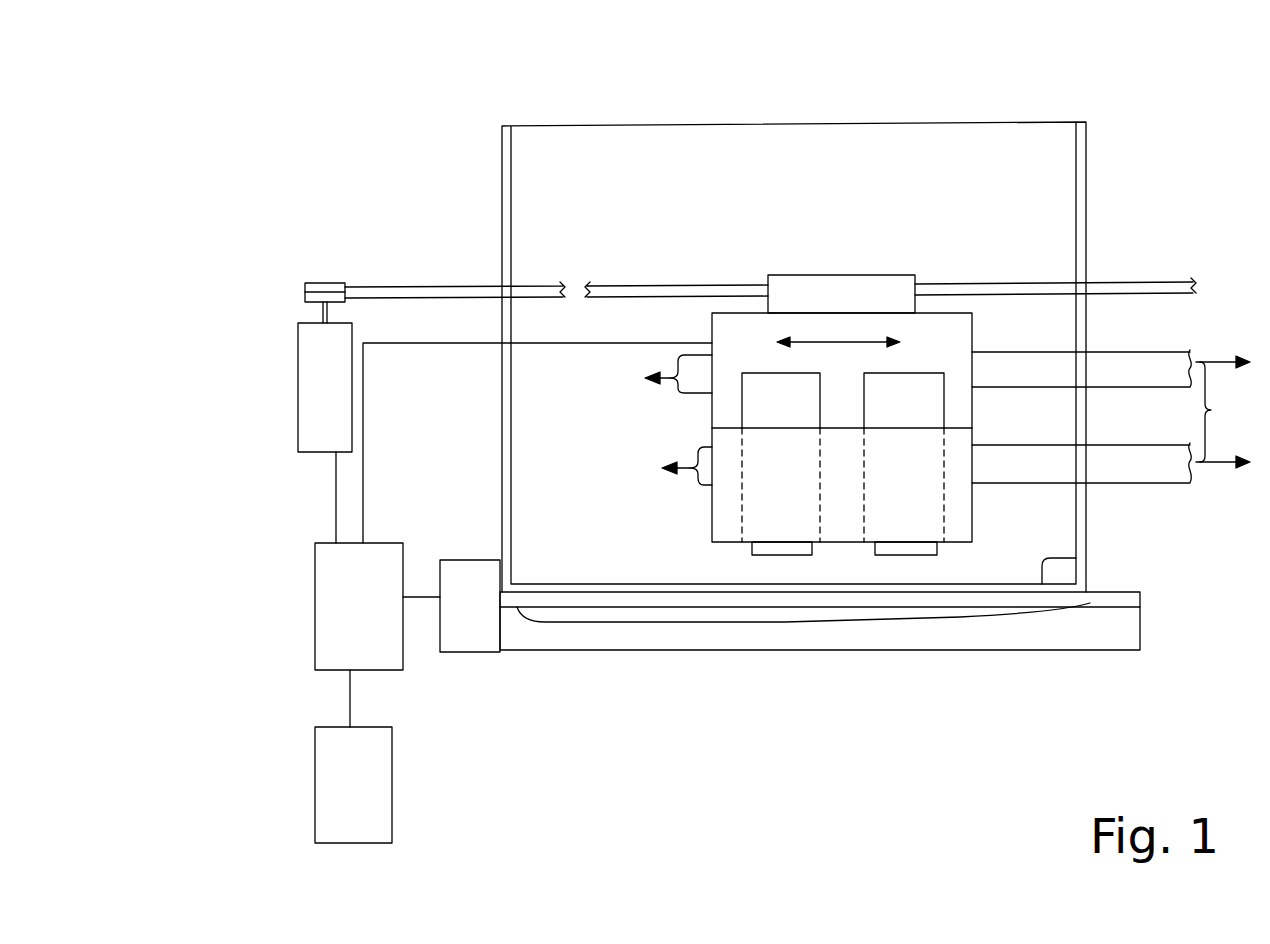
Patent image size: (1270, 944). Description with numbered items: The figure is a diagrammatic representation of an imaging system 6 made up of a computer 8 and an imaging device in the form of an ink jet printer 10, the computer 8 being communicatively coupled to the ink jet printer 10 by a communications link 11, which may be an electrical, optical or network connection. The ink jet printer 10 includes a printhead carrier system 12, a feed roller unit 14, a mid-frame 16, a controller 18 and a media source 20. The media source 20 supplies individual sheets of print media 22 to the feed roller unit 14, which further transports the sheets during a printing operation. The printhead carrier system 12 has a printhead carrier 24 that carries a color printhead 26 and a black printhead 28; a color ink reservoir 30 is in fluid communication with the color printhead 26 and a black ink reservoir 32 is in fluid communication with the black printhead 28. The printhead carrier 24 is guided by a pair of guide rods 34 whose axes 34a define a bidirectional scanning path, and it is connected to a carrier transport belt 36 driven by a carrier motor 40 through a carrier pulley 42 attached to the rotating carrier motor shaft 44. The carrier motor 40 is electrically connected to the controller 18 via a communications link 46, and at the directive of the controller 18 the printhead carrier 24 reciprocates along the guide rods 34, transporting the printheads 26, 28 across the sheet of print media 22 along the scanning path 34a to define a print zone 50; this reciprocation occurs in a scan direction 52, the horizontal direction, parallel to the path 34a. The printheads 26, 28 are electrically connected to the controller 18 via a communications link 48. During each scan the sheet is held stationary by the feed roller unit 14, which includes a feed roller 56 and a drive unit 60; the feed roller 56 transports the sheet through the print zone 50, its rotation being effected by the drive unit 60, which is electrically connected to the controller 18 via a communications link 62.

The imaging system 6 is at (372, 110).
The computer 8 is at (364, 805).
The ink jet printer 10 is at (927, 80).
The communications link 11 is at (350, 697).
The printhead carrier system 12 is at (897, 200).
The feed roller unit 14 is at (540, 697).
The mid-frame 16 is at (1140, 598).
The controller 18 is at (375, 603).
The media source 20 is at (540, 125).
The print media 22 is at (1076, 558).
The printhead carrier 24 is at (973, 417).
The color printhead 26 is at (757, 555).
The black printhead 28 is at (925, 555).
The color ink reservoir 30 is at (768, 373).
The black ink reservoir 32 is at (920, 373).
The guide rods 34 is at (1087, 389).
The bidirectional scanning path 34a is at (692, 465).
The carrier transport belt 36 is at (423, 285).
The carrier motor 40 is at (298, 432).
The carrier pulley 42 is at (322, 283).
The carrier motor shaft 44 is at (320, 312).
The communications link 46 is at (336, 510).
The communications link 48 is at (363, 400).
The print zone 50 is at (805, 622).
The scan direction 52 is at (835, 341).
The feed roller 56 is at (645, 642).
The drive unit 60 is at (486, 623).
The communications link 62 is at (423, 602).